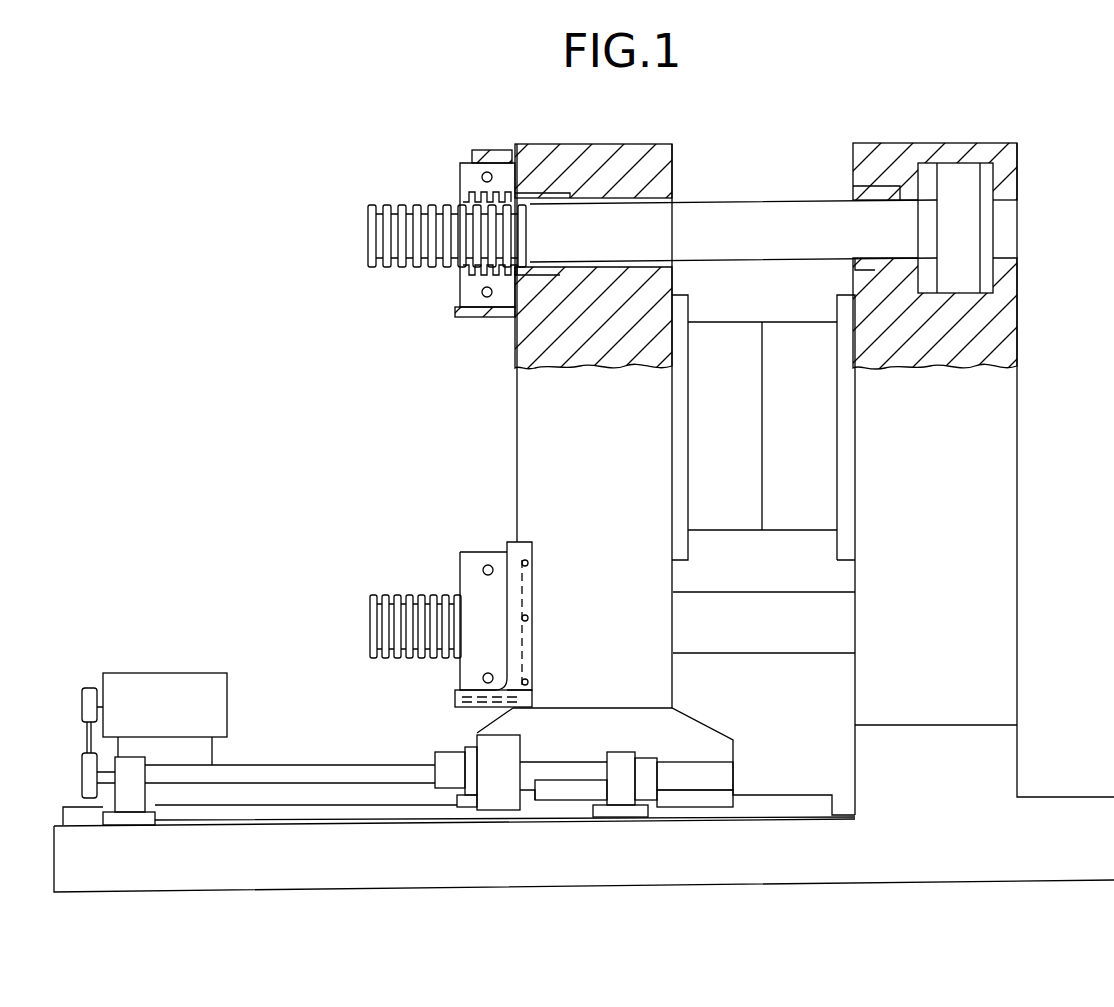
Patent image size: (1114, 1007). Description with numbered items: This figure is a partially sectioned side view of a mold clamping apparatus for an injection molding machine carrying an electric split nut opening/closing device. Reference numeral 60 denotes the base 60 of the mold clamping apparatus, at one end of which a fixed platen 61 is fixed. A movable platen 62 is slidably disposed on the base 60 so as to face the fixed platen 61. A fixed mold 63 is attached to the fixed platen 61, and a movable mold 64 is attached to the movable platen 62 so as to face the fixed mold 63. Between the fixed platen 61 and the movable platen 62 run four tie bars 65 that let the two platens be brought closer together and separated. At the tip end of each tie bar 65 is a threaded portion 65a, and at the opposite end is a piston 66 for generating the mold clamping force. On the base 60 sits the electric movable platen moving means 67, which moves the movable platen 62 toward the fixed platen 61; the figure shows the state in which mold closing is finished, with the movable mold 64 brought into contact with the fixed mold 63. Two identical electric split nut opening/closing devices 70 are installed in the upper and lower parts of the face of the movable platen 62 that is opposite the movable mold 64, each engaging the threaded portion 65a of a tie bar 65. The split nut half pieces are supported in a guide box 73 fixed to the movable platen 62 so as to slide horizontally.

The base 60 is at (1065, 795).
The fixed platen 61 is at (1000, 393).
The movable platen 62 is at (538, 423).
The fixed mold 63 is at (820, 483).
The movable mold 64 is at (707, 442).
The tie bar 65 is at (788, 220).
The threaded portion 65a is at (422, 267).
The piston 66 is at (975, 197).
The movable platen moving means 67 is at (318, 760).
The electric split nut opening/closing device 70 is at (459, 158).
The guide box 73 is at (488, 317).